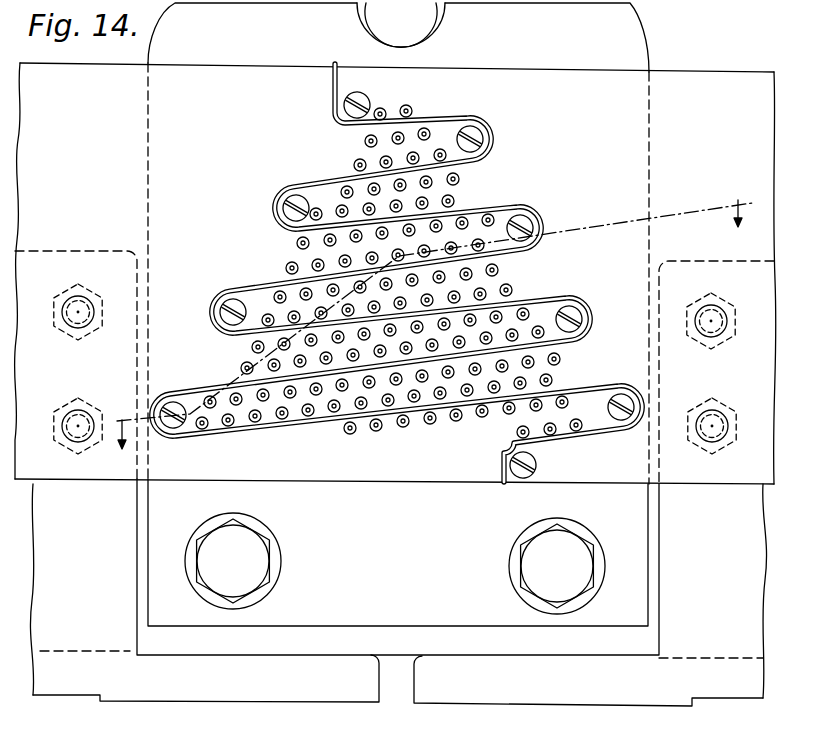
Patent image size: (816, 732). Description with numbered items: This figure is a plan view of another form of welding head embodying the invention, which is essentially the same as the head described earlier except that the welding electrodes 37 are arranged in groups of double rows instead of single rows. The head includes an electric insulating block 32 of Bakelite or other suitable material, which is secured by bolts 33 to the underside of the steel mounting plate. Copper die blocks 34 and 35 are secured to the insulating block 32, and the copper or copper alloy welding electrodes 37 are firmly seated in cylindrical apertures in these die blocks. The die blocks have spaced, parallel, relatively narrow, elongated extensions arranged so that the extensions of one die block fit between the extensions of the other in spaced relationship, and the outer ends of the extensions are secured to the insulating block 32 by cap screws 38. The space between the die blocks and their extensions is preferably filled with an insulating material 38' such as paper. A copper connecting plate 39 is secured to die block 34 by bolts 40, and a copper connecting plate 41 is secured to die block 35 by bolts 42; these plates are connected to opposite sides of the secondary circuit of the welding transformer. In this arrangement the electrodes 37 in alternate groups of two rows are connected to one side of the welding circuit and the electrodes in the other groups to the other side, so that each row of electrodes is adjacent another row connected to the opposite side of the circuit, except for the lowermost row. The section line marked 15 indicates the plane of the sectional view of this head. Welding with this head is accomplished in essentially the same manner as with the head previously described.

The section line 15- 15 is at (437, 336).
The electric insulating block 32 is at (636, 12).
The bolts 33 is at (425, 11).
The copper die block 34 is at (196, 72).
The copper die block 35 is at (706, 80).
The welding electrodes 37 is at (365, 140).
The cap screws 38 is at (397, 285).
The insulating material 38' is at (397, 273).
The copper connecting plate 39 is at (212, 665).
The bolts 40 is at (73, 420).
The copper connecting plate 41 is at (534, 668).
The bolts 42 is at (713, 336).